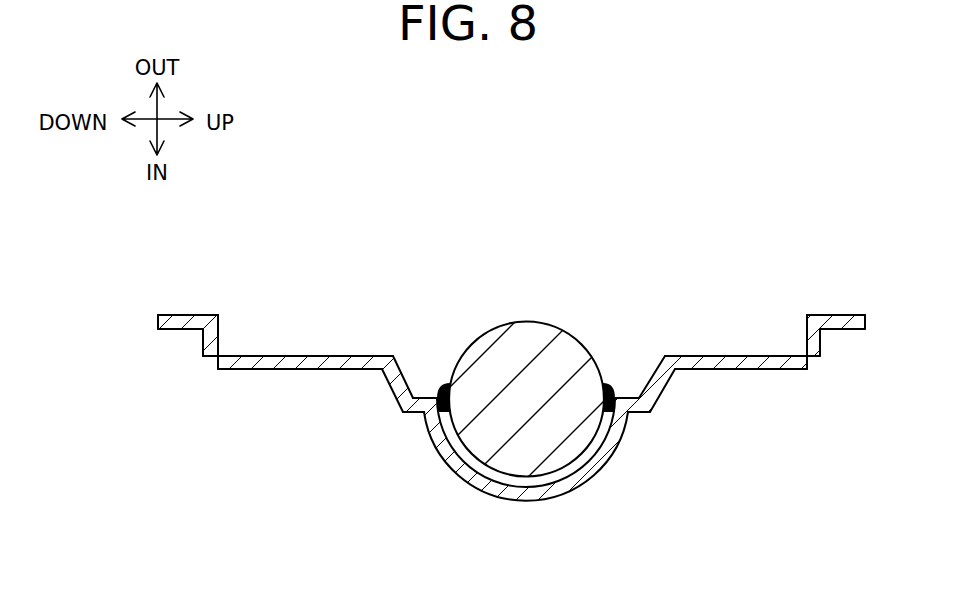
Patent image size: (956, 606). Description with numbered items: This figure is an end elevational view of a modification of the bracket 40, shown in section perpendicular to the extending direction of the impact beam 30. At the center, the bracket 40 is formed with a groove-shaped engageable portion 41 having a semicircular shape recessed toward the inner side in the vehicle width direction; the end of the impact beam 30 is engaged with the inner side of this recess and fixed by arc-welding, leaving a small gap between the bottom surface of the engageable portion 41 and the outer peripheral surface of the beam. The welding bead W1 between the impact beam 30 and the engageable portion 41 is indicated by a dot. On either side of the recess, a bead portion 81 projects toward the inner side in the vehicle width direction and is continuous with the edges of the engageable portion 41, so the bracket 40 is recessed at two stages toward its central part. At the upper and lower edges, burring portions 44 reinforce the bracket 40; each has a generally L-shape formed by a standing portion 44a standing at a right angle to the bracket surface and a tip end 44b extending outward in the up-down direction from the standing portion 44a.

The impact beam 30 is at (532, 328).
The bracket 40 is at (776, 526).
The engageable portion 41 is at (522, 483).
The burring portion 44 is at (272, 264).
The standing portion 44a is at (218, 338).
The tip end 44b is at (189, 315).
The bead portion 81 is at (398, 364).
The welding bead W1 is at (438, 383).